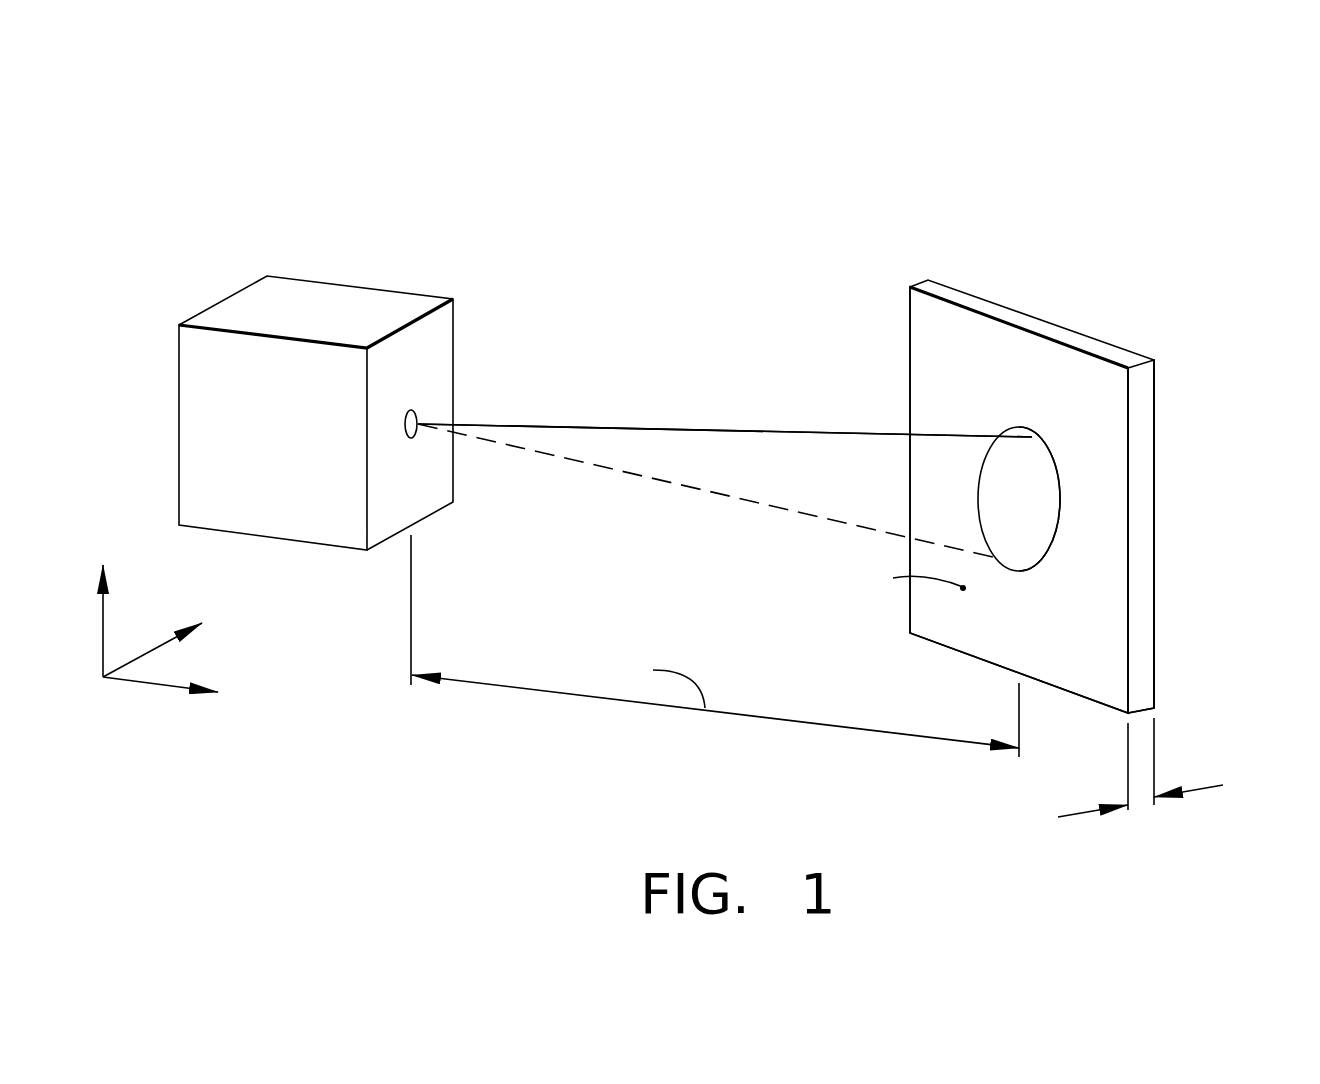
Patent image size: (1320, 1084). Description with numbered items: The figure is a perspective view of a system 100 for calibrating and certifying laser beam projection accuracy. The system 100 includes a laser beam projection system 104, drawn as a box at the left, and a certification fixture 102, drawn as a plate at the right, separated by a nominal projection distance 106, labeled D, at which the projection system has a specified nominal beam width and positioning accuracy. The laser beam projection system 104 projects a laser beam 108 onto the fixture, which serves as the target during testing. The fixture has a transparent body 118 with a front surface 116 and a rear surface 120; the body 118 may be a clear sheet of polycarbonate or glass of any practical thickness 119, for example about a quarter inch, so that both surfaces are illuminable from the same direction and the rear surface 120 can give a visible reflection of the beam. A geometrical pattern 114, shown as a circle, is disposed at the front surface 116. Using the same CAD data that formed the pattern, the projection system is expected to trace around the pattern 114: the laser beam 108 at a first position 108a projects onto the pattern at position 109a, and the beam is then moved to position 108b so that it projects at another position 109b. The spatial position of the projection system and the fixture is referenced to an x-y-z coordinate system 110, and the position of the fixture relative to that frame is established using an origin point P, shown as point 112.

The system 100 is at (422, 142).
The certification fixture 102 is at (967, 297).
The laser beam projection system 104 is at (365, 303).
The nominal projection distance 106 is at (760, 720).
The laser beam 108 is at (627, 427).
The first position of laser beam 108a is at (672, 430).
The second position of laser beam 108b is at (748, 503).
The position on pattern 109a is at (1032, 437).
The other position on pattern 109b is at (1005, 565).
The x-y-z coordinate system 110 is at (143, 683).
The origin point 112 is at (963, 588).
The geometrical pattern 114 is at (1062, 507).
The front surface 116 is at (1097, 409).
The body 118 is at (1142, 578).
The thickness 119 is at (1203, 788).
The rear surface 120 is at (1153, 667).